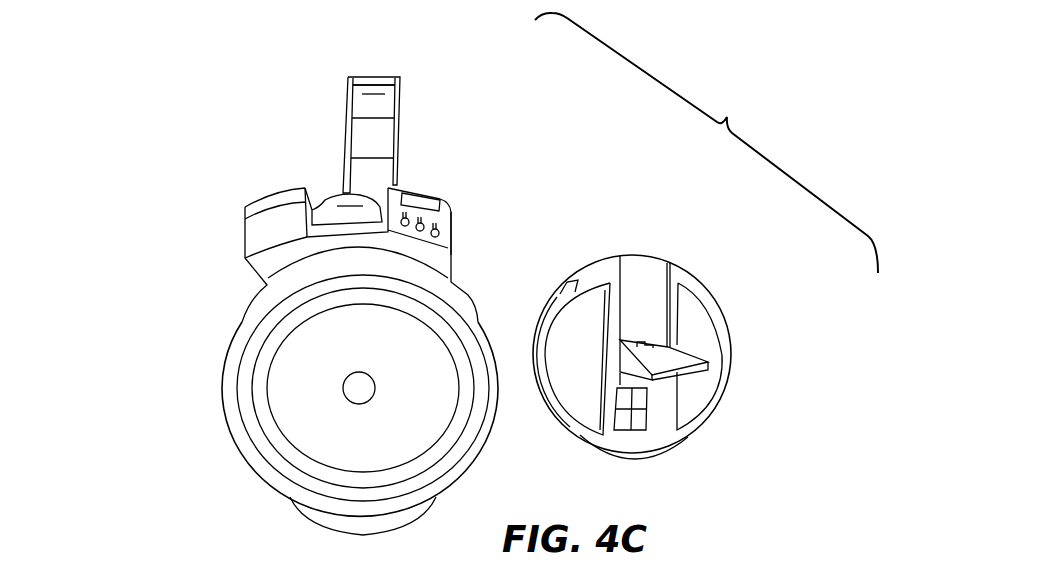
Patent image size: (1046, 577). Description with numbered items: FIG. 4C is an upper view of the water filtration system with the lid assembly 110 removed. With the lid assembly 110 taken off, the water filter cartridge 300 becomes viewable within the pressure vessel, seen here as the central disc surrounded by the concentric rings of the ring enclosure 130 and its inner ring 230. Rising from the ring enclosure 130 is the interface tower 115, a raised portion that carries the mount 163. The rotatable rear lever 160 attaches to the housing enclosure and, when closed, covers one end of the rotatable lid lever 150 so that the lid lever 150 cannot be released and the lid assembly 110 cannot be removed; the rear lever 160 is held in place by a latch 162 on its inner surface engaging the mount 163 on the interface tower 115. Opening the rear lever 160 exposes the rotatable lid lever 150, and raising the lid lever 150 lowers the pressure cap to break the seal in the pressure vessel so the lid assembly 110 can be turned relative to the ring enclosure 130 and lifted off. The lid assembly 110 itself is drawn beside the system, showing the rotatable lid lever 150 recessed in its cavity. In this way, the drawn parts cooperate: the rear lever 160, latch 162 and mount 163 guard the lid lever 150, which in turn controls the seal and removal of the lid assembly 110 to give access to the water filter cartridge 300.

The lid assembly 110 is at (722, 273).
The interface tower 115 is at (240, 203).
The ring enclosure 130 is at (218, 330).
The rotatable lid lever 150 is at (718, 368).
The rotatable rear lever 160 is at (335, 115).
The latch 162 is at (367, 93).
The mount 163 is at (338, 198).
The ring 230 is at (247, 407).
The water filter cartridge 300 is at (323, 433).